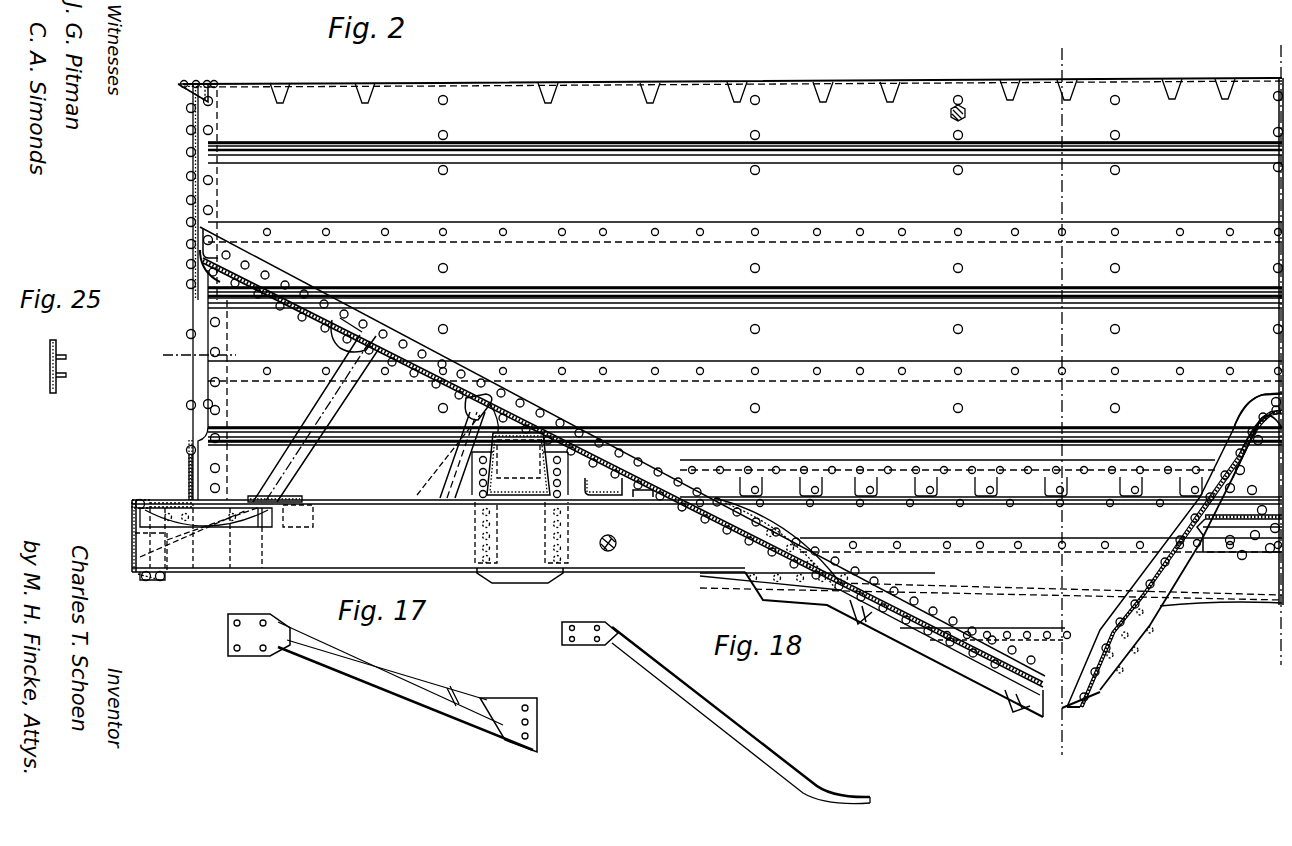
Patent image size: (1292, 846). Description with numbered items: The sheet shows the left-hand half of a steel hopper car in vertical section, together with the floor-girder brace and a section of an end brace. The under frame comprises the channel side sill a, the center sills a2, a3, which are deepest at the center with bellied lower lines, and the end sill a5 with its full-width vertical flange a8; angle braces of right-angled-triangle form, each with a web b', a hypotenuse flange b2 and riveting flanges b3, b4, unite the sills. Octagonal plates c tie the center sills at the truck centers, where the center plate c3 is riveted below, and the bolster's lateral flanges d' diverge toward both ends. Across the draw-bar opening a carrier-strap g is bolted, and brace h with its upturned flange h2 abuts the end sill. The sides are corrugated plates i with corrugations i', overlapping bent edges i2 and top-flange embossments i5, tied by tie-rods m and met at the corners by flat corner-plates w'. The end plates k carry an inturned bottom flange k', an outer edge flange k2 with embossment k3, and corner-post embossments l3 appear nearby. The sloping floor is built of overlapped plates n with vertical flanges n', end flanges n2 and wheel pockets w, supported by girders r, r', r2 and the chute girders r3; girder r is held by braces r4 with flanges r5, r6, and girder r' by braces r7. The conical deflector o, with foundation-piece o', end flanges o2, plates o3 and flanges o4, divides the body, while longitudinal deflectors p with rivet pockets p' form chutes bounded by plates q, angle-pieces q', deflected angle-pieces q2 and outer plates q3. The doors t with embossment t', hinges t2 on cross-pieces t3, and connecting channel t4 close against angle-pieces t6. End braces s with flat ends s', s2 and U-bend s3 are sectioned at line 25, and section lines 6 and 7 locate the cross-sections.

In FIG. 2, the side plates i is at (733, 341).
In FIG. 2, the longitudinal corrugations i' is at (745, 161).
In FIG. 2, the bent lower edges i2 is at (930, 230).
In FIG. 2, the embossments i5 is at (752, 93).
In FIG. 2, the transverse tie-rods m is at (968, 112).
In FIG. 2, the section line 7 7 is at (1056, 399).
In FIG. 2, the section line 6 6 is at (1271, 346).
In FIG. 2, the flat corner-plates w' is at (203, 73).
In FIG. 2, the outwardly-projecting edge flange k2 is at (194, 92).
In FIG. 2, the embossment k3 is at (192, 118).
In FIG. 2, the end plates k is at (182, 295).
In FIG. 2, the flat upper ends of end braces s2 is at (190, 210).
In FIG. 2, the end flanges of floor-plates n2 is at (215, 226).
In FIG. 2, the inturned bottom flange k' is at (193, 375).
In FIG. 2, the U-shaped center bend s3 is at (189, 403).
In FIG. 25, the U-shaped center bend s3 is at (68, 377).
In FIG. 2, the section line 25 is at (197, 355).
In FIG. 2, the embossments of corner-post l3 is at (200, 404).
In FIG. 2, the vertical flanges of end sills a8 is at (190, 444).
In FIG. 2, the end sill a5 is at (133, 520).
In FIG. 2, the base flange of angle brace b4 is at (140, 500).
In FIG. 2, the web of angle brace b' is at (171, 483).
In FIG. 2, the hypotenuse flange of angle brace b2 is at (232, 515).
In FIG. 2, the side flange of angle brace b3 is at (268, 522).
In FIG. 2, the draw-bar brace h is at (314, 520).
In FIG. 2, the carrier-strap g is at (143, 578).
In FIG. 2, the upturned flange of brace h2 is at (160, 580).
In FIG. 2, the center sill a3 is at (588, 498).
In FIG. 2, the flat lower ends of end braces s' is at (216, 474).
In FIG. 25, the flat lower ends of end braces s' is at (71, 338).
In FIG. 2, the girder flange of brace r6 is at (262, 498).
In FIG. 17, the girder flange of brace r6 is at (538, 714).
In FIG. 18, the girder flange of brace r6 is at (855, 798).
In FIG. 2, the floor-girder braces r4 is at (320, 412).
In FIG. 17, the floor-girder braces r4 is at (378, 666).
In FIG. 18, the floor-girder braces r4 is at (712, 704).
In FIG. 2, the transverse girder r is at (332, 332).
In FIG. 2, the braces for girder r7 is at (445, 458).
In FIG. 2, the octagonal plates c is at (450, 495).
In FIG. 2, the transverse girder r' is at (460, 410).
In FIG. 2, the side sill a is at (518, 465).
In FIG. 2, the center sill a2 is at (575, 462).
In FIG. 2, the lateral flanges of bolster d' is at (506, 532).
In FIG. 2, the center plate c3 is at (534, 580).
In FIG. 2, the transverse girder r2 is at (617, 481).
In FIG. 2, the floor-plates n is at (622, 472).
In FIG. 2, the vertical flanges of floor-plates n' is at (623, 472).
In FIG. 2, the wheel pockets w is at (776, 543).
In FIG. 2, the outer chute plates q3 is at (877, 458).
In FIG. 2, the rivet pockets p' is at (971, 485).
In FIG. 2, the longitudinal deflectors p is at (981, 500).
In FIG. 2, the inner chute plates q is at (991, 561).
In FIG. 2, the angle-pieces q' is at (991, 578).
In FIG. 2, the deflected angle-pieces q2 is at (935, 648).
In FIG. 2, the chute-floor girders r3 is at (860, 620).
In FIG. 2, the door angle-pieces t6 is at (1060, 680).
In FIG. 2, the channel-beam t4 is at (1085, 705).
In FIG. 2, the door t is at (1191, 553).
In FIG. 2, the door embossment t' is at (1174, 550).
In FIG. 2, the door hinge t2 is at (1204, 540).
In FIG. 2, the cross-pieces t3 is at (1268, 528).
In FIG. 2, the conical deflector o is at (1245, 401).
In FIG. 2, the deflector plates o3 is at (1252, 418).
In FIG. 2, the deflector end plate flanges o4 is at (1270, 390).
In FIG. 2, the foundation-piece o' is at (1253, 484).
In FIG. 2, the foundation-piece end flanges o2 is at (1252, 466).
In FIG. 17, the sill flange of brace r5 is at (250, 620).
In FIG. 18, the sill flange of brace r5 is at (590, 622).
In FIG. 25, the end braces s is at (45, 366).